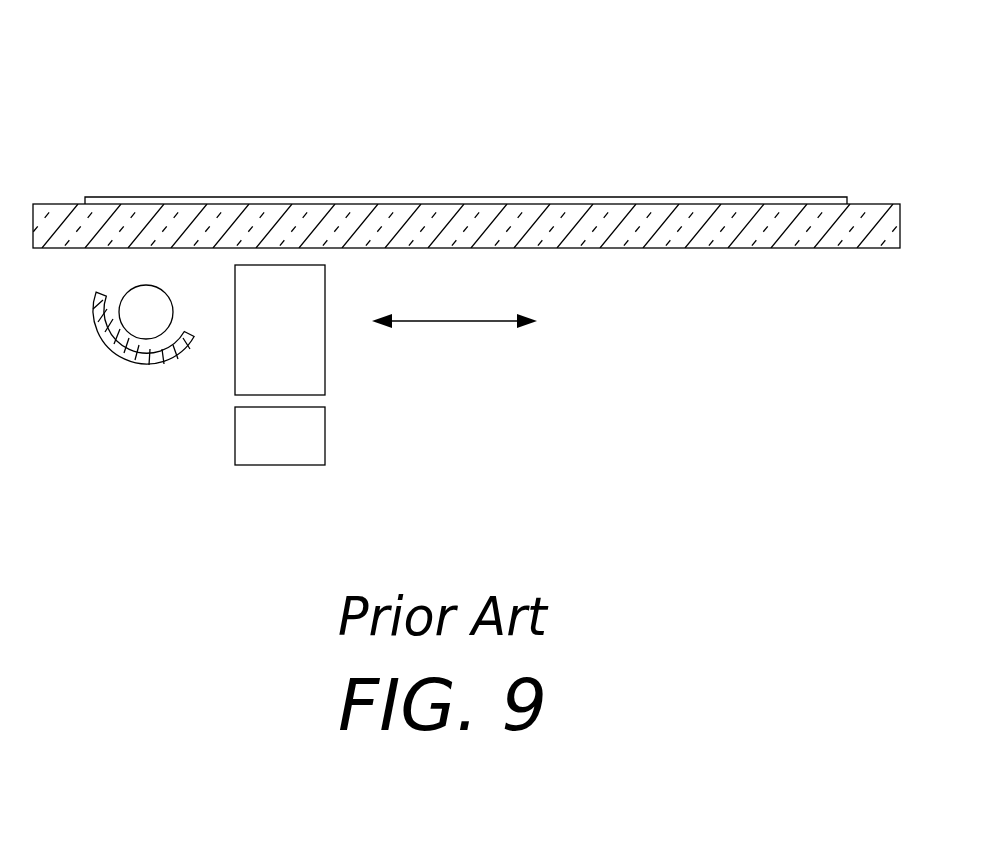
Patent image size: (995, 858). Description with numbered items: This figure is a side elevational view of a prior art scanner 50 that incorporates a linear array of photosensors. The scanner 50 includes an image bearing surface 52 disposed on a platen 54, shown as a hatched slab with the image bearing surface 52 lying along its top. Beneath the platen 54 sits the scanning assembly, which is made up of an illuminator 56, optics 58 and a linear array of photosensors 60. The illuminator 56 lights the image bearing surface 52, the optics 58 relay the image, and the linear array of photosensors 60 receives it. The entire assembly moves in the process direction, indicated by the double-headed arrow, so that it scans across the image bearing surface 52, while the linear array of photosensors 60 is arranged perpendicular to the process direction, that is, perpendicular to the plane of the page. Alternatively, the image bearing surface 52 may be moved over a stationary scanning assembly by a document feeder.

The scanner 50 is at (637, 100).
The image bearing surface 52 is at (397, 198).
The platen 54 is at (698, 248).
The illuminator 56 is at (98, 335).
The optics 58 is at (325, 358).
The linear array of photosensors 60 is at (235, 437).